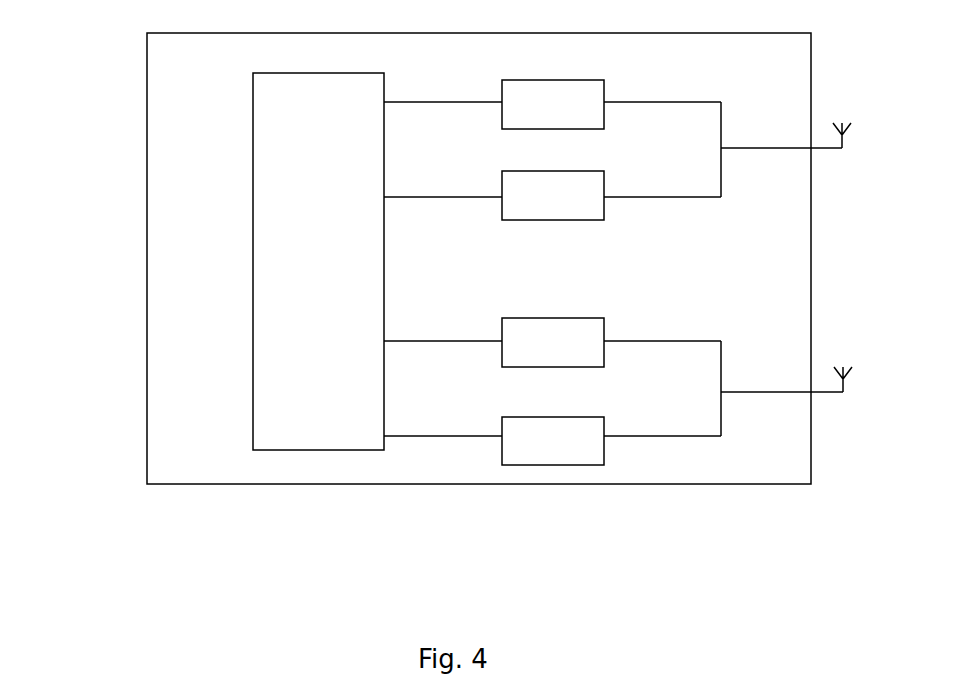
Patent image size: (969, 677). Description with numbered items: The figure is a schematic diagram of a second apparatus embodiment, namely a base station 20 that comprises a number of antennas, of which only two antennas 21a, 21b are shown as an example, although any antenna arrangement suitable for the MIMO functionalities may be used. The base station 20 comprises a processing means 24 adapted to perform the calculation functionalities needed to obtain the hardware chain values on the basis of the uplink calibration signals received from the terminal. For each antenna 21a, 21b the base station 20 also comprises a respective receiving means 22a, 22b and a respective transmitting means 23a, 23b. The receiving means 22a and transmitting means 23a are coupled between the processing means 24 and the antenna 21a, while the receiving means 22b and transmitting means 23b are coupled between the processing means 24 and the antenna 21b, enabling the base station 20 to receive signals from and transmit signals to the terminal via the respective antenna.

The base station 20 is at (147, 238).
The processing means 24 is at (278, 261).
The receiving means 22a is at (552, 91).
The transmitting means 23a is at (552, 187).
The antenna 21a is at (850, 133).
The receiving means 22b is at (552, 328).
The transmitting means 23b is at (552, 429).
The antenna 21b is at (853, 374).